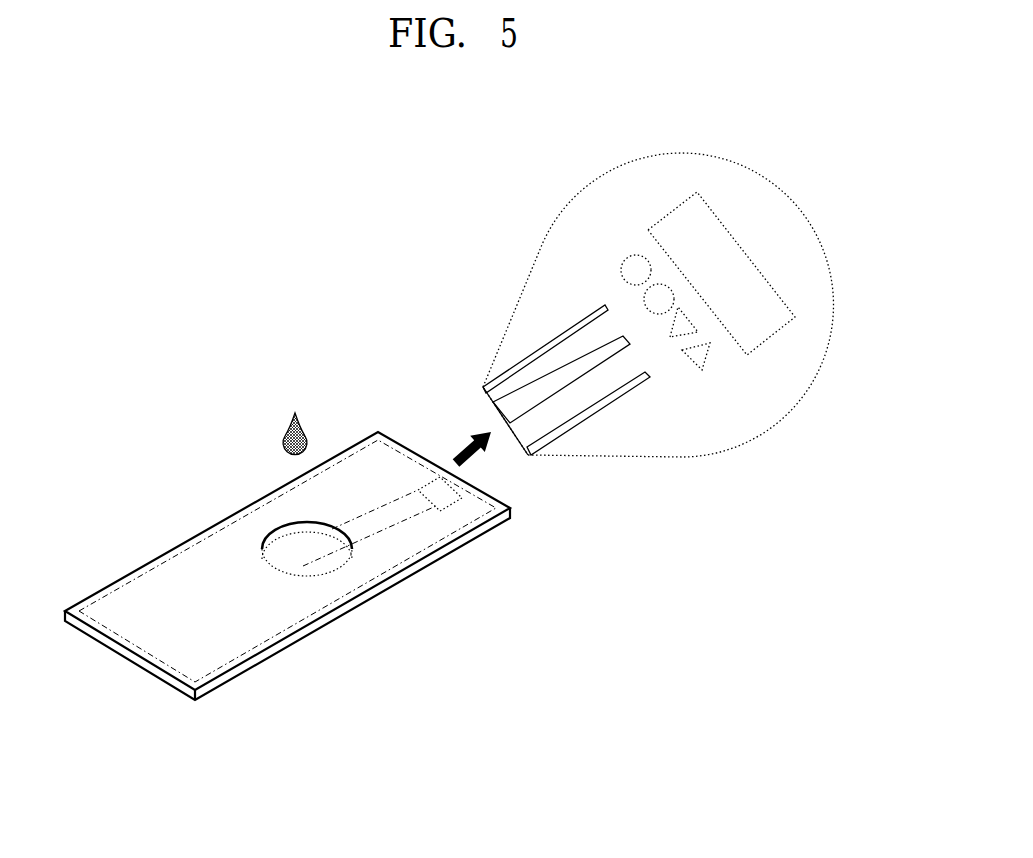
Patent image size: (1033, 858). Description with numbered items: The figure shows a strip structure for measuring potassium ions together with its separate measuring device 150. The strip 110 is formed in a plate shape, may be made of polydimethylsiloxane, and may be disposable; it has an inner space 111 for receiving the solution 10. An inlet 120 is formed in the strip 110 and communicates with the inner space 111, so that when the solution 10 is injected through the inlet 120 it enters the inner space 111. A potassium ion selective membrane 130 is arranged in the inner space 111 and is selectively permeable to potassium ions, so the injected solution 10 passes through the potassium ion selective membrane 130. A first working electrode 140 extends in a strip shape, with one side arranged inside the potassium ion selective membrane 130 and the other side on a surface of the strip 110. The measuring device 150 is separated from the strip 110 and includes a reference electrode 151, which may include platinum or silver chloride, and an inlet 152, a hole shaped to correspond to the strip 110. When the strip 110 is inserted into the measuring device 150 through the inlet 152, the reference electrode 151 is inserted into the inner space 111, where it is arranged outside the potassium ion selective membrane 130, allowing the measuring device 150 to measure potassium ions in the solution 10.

The solution 10 is at (302, 427).
The strip 110 is at (230, 655).
The inner space 111 is at (318, 568).
The inlet 120 is at (270, 537).
The potassium ion selective membrane 130 is at (288, 567).
The first working electrode 140 is at (438, 487).
The measuring device 150 is at (763, 178).
The reference electrode 151 is at (575, 376).
The inlet 152 is at (497, 408).